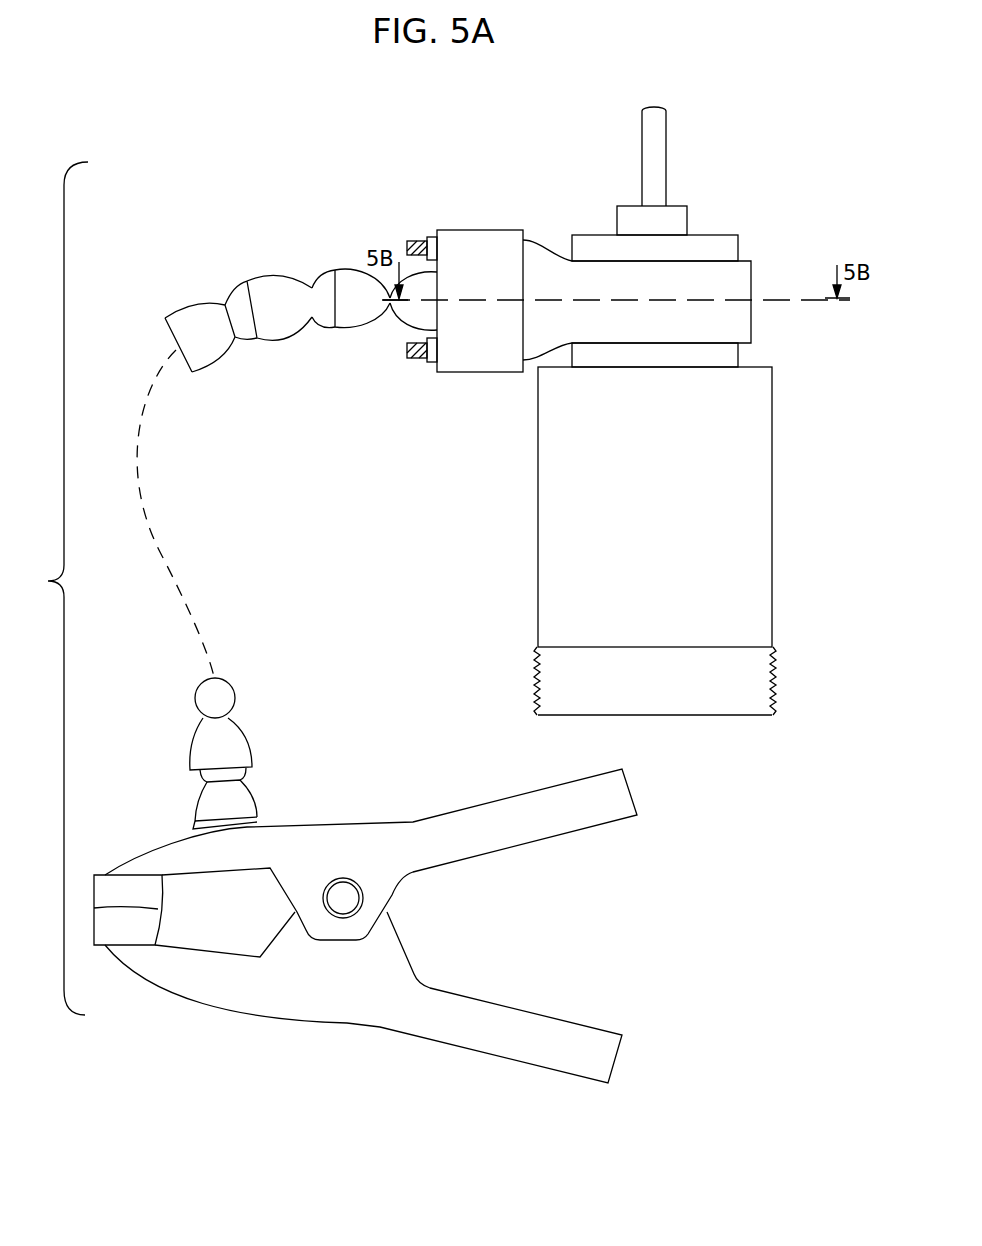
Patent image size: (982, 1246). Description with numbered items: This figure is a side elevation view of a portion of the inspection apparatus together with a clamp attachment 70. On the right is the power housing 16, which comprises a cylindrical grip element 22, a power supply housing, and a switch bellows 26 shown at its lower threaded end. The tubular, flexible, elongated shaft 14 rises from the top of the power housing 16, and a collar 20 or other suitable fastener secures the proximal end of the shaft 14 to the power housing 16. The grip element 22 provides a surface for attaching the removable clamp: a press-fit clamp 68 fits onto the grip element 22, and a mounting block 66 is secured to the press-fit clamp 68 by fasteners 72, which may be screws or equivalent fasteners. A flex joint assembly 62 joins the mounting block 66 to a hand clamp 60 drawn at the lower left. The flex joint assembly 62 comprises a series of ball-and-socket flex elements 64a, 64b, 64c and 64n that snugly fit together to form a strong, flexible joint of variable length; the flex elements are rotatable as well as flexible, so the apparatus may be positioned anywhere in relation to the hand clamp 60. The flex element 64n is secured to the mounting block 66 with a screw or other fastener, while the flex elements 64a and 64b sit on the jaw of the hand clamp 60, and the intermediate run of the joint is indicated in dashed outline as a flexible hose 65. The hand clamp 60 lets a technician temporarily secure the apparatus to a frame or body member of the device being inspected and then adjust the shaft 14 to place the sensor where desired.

The shaft 14 is at (662, 128).
The collar 20 is at (683, 216).
The grip element 22 is at (738, 235).
The press-fit clamp 68 is at (743, 285).
The mounting block 66 is at (492, 253).
The fasteners 72 is at (410, 358).
The power housing 16 is at (669, 504).
The switch bellows 26 is at (770, 678).
The ball-and-socket flex element 64n is at (398, 312).
The ball-and-socket flex element 64c is at (196, 319).
The flexible hose 65 is at (160, 550).
The ball-and-socket flex element 64b is at (200, 743).
The ball-and-socket flex element 64a is at (205, 810).
The flex joint assembly 62 is at (262, 782).
The hand clamp 60 is at (513, 800).
The clamp attachment 70 is at (52, 588).